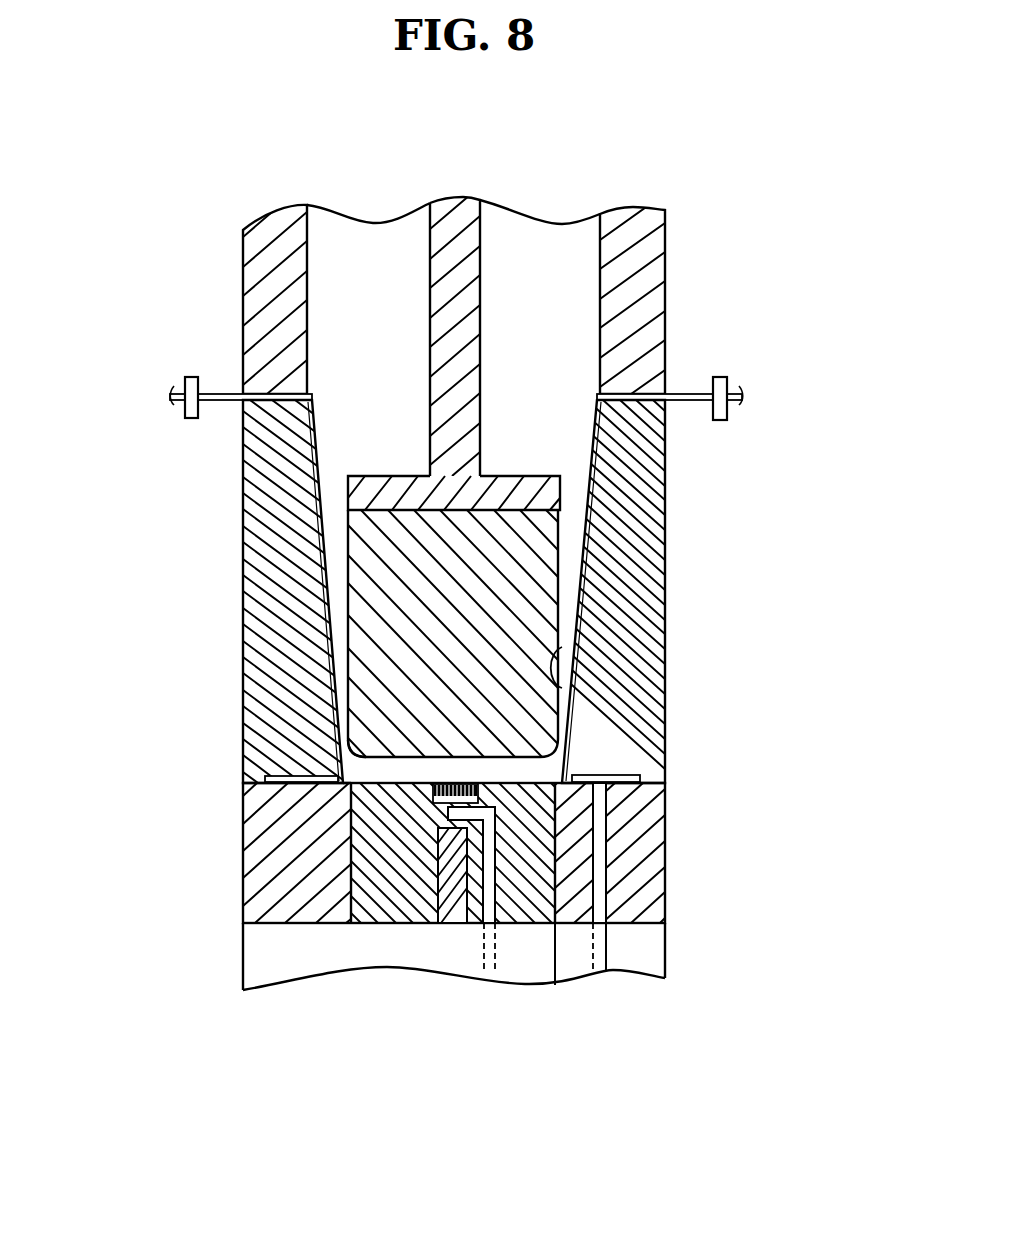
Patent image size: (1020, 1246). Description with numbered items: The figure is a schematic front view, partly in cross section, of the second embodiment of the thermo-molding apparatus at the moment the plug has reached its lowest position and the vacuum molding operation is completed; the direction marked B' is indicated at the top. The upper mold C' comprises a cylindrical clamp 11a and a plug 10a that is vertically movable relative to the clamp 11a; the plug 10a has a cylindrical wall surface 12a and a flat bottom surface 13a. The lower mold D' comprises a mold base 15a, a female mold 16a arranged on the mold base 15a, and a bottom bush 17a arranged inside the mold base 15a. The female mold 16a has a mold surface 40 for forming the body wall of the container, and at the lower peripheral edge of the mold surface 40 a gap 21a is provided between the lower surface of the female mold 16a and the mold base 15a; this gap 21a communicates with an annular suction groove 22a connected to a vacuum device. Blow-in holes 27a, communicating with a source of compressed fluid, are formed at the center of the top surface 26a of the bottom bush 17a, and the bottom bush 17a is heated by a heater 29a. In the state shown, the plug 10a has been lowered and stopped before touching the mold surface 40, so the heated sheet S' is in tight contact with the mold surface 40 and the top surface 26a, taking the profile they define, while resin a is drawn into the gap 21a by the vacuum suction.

The upper die assembly B' is at (459, 149).
The upper mold C' is at (768, 270).
The lower mold D' is at (783, 674).
The sheet S' is at (371, 591).
The cylindrical clamp 11a is at (243, 304).
The female mold 16a is at (681, 608).
The plug 10a is at (562, 551).
The cylindrical wall surface 12a is at (347, 597).
The flat bottom surface 13a is at (345, 757).
The annular suction groove 22a is at (350, 764).
The gap 21a is at (570, 787).
The mold base 15a is at (681, 878).
The bottom bush 17a is at (571, 902).
The top surface 26a is at (348, 786).
The blow-in holes 27a is at (417, 800).
The heater 29a is at (436, 884).
The mold surface 40 is at (562, 692).
The resin a is at (350, 787).